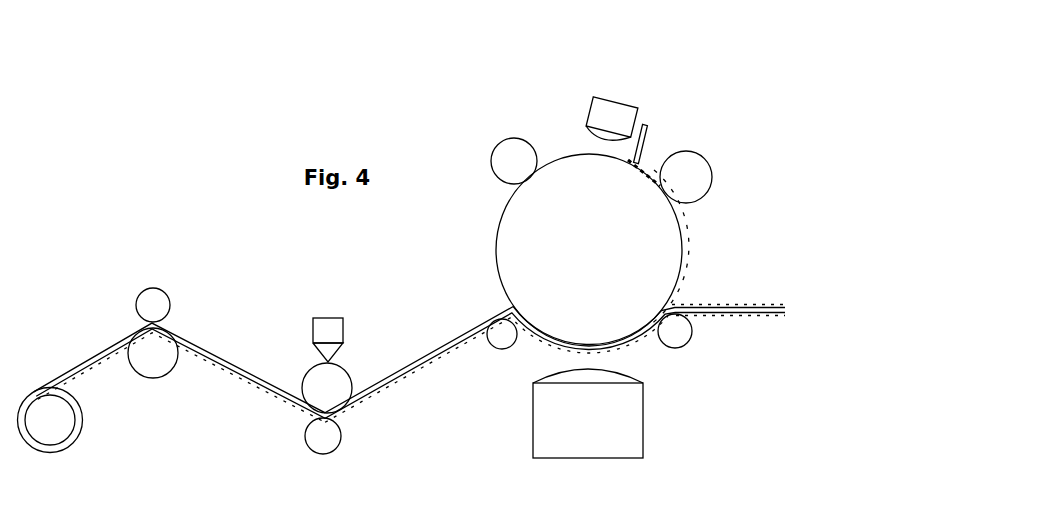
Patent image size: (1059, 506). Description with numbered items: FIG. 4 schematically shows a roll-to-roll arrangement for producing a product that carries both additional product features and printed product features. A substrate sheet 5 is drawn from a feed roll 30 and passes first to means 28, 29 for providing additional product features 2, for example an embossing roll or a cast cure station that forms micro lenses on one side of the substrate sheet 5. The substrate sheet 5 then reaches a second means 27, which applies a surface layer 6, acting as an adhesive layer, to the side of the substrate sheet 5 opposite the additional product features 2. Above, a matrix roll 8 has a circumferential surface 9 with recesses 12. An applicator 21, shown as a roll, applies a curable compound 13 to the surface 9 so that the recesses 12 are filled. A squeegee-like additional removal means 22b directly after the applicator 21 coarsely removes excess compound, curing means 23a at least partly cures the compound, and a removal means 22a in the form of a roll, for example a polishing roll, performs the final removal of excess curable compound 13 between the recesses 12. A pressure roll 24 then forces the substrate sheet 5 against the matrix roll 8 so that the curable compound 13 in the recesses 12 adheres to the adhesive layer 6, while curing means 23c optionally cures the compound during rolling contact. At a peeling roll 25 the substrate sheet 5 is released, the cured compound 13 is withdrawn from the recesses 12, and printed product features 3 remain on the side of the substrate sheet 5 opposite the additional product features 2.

The additional product features 2 is at (207, 365).
The printed product features 3 is at (742, 303).
The substrate sheet 5 is at (462, 337).
The surface layer 6 is at (400, 371).
The matrix roll 8 is at (662, 250).
The circumferential surface 9 is at (494, 242).
The recesses 12 is at (683, 262).
The curable compound 13 is at (648, 173).
The applicator 21 is at (697, 172).
The removal means 22a is at (513, 152).
The additional removal means 22b is at (648, 123).
The curing means 23a is at (608, 112).
The curing means 23c is at (620, 427).
The pressure roll 24 is at (502, 334).
The peeling roll 25 is at (673, 334).
The second means for forming additional product features 27 is at (328, 313).
The first means for providing additional product features 28 is at (157, 277).
The means for providing additional product features 29 is at (322, 453).
The feed roll 30 is at (45, 423).